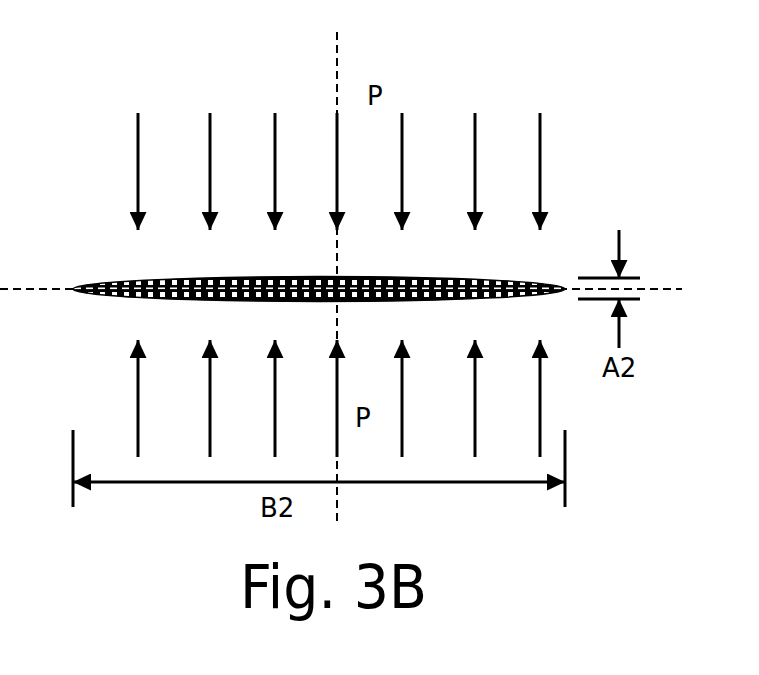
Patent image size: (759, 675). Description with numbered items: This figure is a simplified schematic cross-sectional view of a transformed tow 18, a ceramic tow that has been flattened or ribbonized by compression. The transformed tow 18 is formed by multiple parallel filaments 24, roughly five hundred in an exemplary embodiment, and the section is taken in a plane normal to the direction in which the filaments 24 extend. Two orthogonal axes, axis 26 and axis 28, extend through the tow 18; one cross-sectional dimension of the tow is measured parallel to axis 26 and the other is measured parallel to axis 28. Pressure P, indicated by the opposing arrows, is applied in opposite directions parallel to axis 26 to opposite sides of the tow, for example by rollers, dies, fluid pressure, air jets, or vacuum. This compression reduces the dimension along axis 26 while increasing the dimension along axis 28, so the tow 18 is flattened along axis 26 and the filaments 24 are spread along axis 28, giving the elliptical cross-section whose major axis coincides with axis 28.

The transformed tow 18 is at (413, 267).
The filaments 24 is at (502, 287).
The axis 26 is at (336, 55).
The axis 28 is at (670, 283).